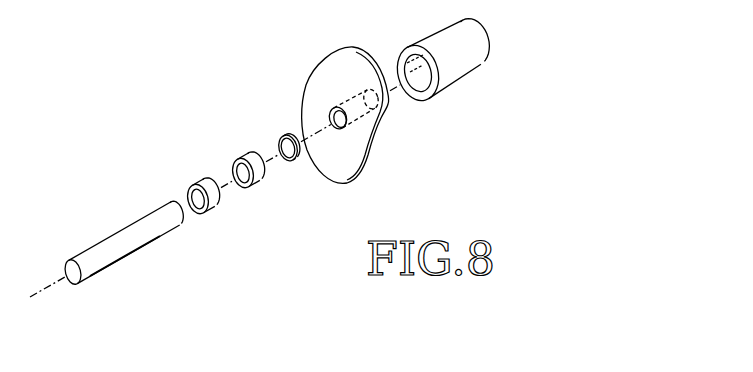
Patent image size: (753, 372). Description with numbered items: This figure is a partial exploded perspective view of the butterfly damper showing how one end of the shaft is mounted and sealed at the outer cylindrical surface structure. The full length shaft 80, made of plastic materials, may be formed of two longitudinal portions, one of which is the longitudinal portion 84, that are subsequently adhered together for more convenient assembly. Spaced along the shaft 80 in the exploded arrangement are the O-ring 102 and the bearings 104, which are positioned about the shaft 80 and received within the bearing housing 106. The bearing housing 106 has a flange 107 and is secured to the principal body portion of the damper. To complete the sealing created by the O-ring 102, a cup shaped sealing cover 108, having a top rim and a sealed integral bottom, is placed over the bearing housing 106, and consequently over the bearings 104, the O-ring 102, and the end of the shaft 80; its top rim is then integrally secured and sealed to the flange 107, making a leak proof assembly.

The shaft 80 is at (147, 213).
The longitudinal portion of the shaft 84 is at (152, 240).
The O-ring 102 is at (285, 136).
The bearings 104 is at (198, 183).
The bearing housing 106 is at (372, 91).
The flange 107 is at (375, 155).
The sealing cover 108 is at (487, 53).